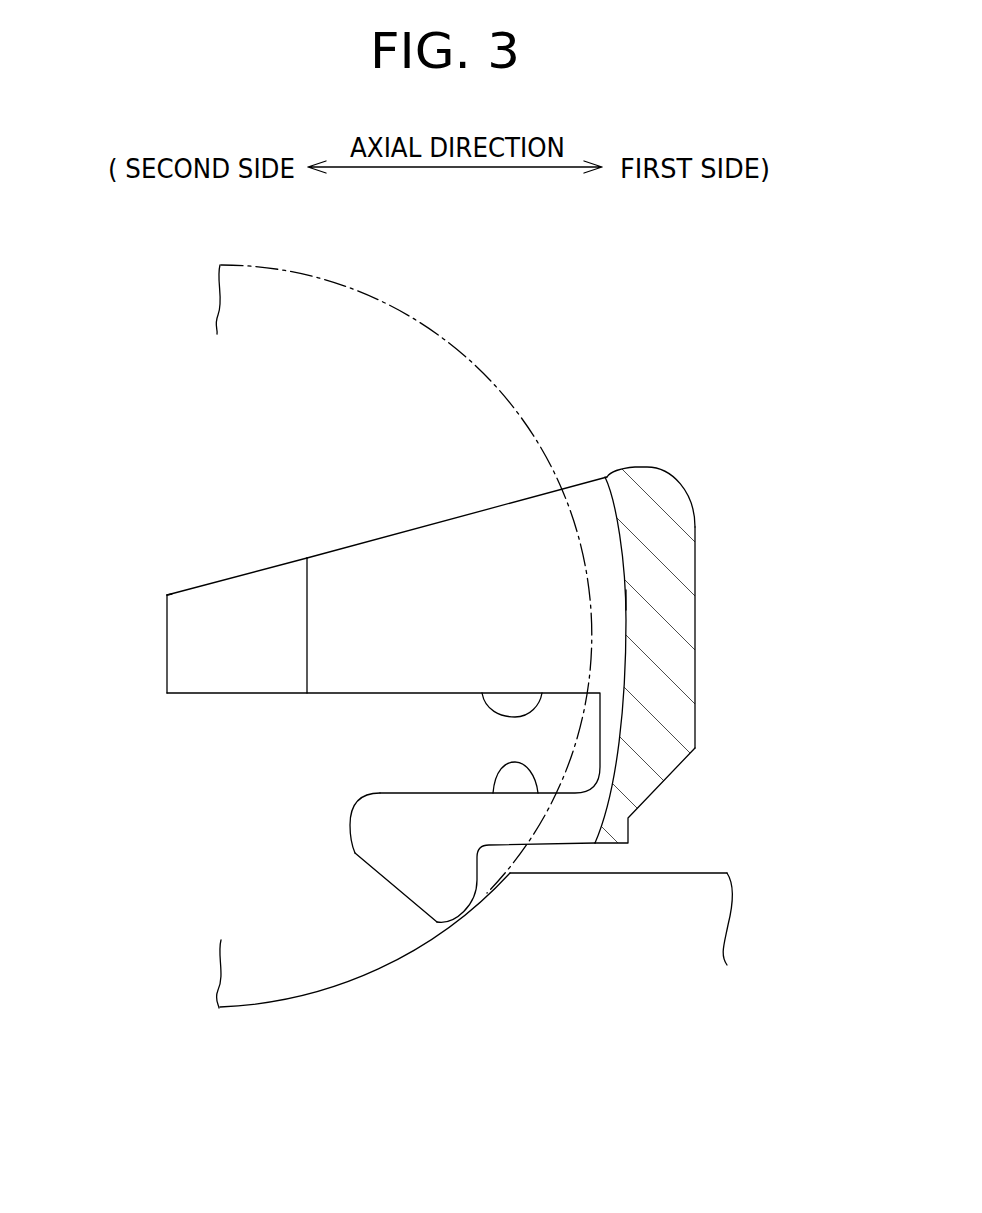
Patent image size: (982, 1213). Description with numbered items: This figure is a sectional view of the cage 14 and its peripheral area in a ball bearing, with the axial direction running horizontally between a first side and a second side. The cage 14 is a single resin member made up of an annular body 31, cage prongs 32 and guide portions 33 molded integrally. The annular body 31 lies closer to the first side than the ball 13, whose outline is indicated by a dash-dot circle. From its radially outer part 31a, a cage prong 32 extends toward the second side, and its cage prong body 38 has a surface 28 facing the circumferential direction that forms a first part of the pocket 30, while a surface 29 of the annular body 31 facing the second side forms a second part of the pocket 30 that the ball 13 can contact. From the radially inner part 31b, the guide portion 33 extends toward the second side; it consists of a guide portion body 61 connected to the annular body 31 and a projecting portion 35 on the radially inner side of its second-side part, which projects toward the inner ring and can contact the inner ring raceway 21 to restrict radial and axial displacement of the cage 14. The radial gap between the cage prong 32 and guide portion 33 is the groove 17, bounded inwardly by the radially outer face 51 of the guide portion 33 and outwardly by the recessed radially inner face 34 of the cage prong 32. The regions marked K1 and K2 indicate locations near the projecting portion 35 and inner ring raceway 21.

The ball 13 is at (500, 387).
The cage 14 is at (671, 451).
The groove 17 is at (384, 722).
The inner ring raceway 21 is at (415, 940).
The surface 28 is at (238, 632).
The surface 29 is at (610, 608).
The pocket 30 is at (373, 553).
The annular body 31 is at (695, 640).
The radially outer part 31a is at (657, 540).
The radially inner part 31b is at (617, 832).
The cage prong 32 is at (152, 580).
The guide portion 33 is at (350, 830).
The radially inner face 34 is at (542, 692).
The projecting portion 35 is at (393, 873).
The cage prong body 38 is at (245, 570).
The radially outer face 51 is at (538, 793).
The guide portion body 61 is at (478, 815).
The first region K1 is at (278, 983).
The second region K2 is at (458, 889).